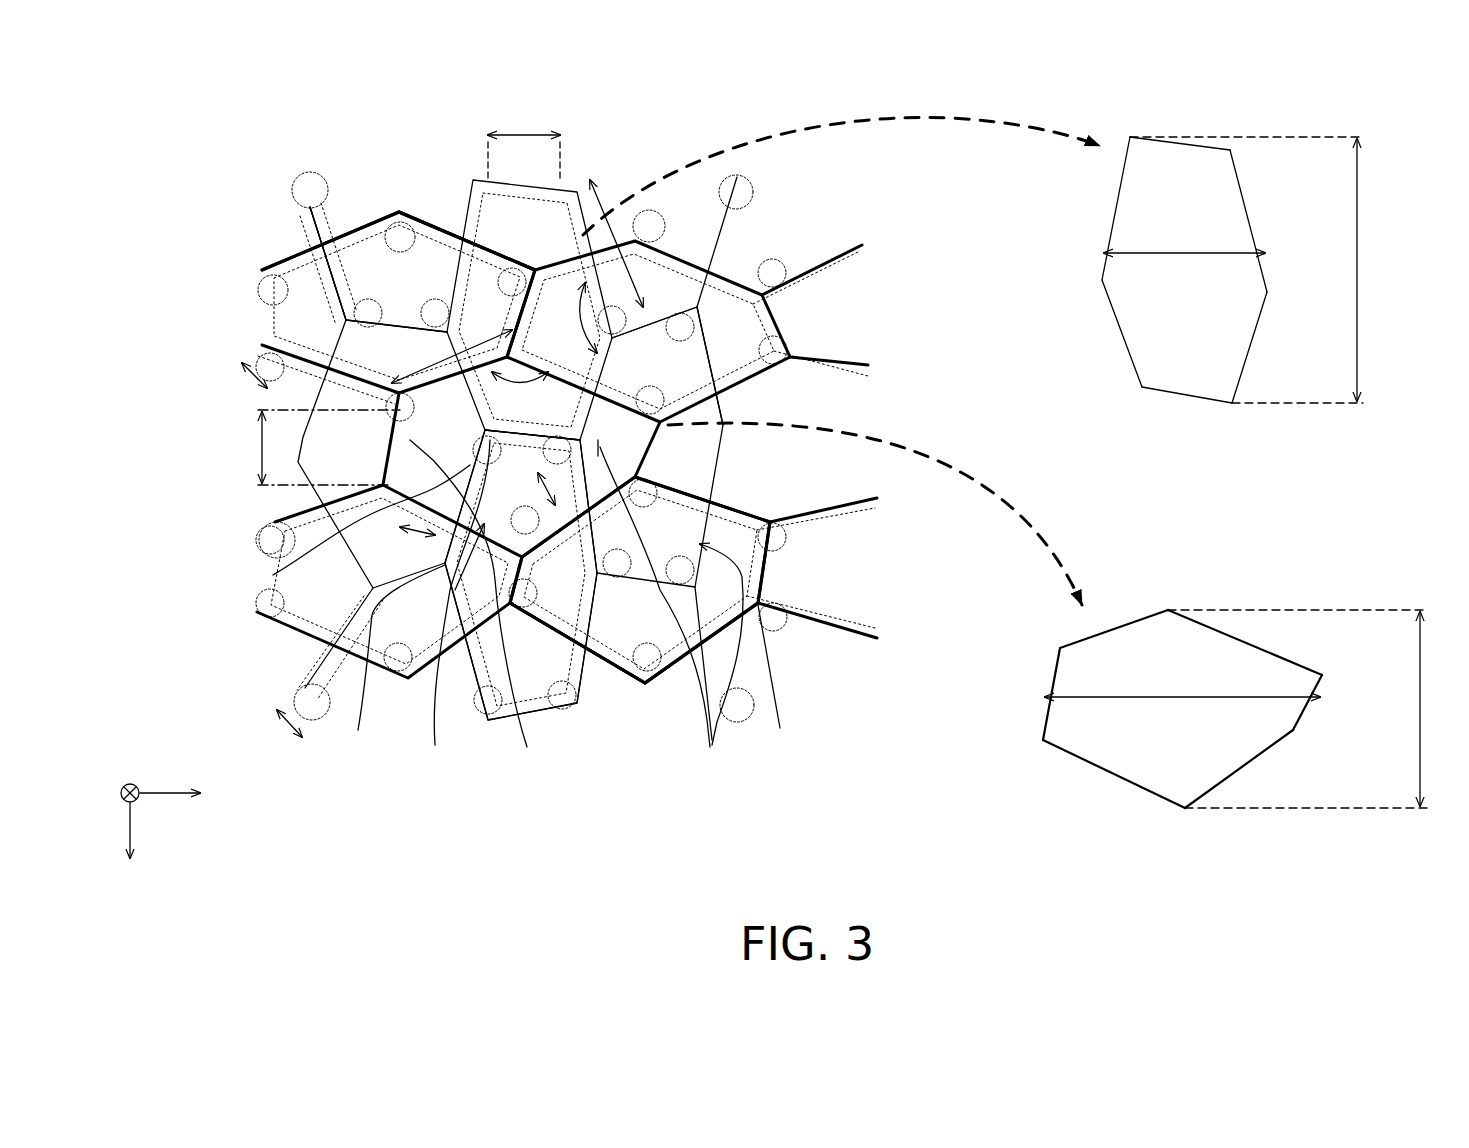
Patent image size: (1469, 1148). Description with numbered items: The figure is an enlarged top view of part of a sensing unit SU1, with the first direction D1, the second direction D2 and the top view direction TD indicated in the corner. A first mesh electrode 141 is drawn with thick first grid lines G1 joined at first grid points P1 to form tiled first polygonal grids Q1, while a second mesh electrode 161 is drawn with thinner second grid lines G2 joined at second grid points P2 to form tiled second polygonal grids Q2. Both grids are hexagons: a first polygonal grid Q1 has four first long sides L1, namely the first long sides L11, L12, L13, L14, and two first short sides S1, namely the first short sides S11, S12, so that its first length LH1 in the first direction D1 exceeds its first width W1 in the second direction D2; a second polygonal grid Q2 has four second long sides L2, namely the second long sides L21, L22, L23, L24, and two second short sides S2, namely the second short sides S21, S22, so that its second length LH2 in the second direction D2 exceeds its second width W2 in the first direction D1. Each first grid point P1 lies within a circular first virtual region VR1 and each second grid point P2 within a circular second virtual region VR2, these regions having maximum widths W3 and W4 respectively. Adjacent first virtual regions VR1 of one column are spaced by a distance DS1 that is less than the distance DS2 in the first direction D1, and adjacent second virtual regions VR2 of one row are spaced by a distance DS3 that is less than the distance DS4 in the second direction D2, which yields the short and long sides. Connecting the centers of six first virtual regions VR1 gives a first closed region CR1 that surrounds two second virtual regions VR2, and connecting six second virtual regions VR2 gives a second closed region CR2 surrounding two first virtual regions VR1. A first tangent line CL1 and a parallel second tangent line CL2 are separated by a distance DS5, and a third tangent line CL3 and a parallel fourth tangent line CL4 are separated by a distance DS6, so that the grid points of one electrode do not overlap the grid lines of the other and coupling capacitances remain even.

The sensing unit SU1 is at (228, 165).
The first mesh electrode 141 is at (448, 130).
The first grid point P1 is at (399, 210).
The first grid line G1 is at (440, 225).
The second mesh electrode 161 is at (178, 222).
The second grid line G2 is at (317, 232).
The second grid point P2 is at (345, 319).
The first virtual region VR1 is at (260, 542).
The second virtual region VR2 is at (303, 180).
The first long side L1 is at (672, 680).
The second long side L2 is at (727, 403).
The first short side S1 is at (772, 578).
The second short side S2 is at (637, 580).
The first tangent line CL1 is at (480, 612).
The second tangent line CL2 is at (670, 613).
The third tangent line CL3 is at (390, 666).
The fourth tangent line CL4 is at (272, 576).
The first closed region CR1 is at (451, 604).
The second closed region CR2 is at (782, 685).
The distance between center points of adjacent first virtual regions of the same col DS1 is at (305, 447).
The distance between center points of adjacent first virtual regions in the first di DS2 is at (442, 356).
The distance between center points of adjacent second virtual regions of the same ro DS3 is at (524, 145).
The distance between center points of adjacent second virtual regions in the second DS4 is at (639, 243).
The distance between second tangent line and first tangent line DS5 is at (522, 493).
The distance between fourth tangent line and third tangent line DS6 is at (426, 557).
The first width W1 is at (1318, 709).
The second width W2 is at (1184, 238).
The maximum width of first virtual region W3 is at (239, 384).
The maximum width of second virtual region W4 is at (288, 718).
The top view direction TD is at (125, 777).
The first direction D1 is at (190, 796).
The second direction D2 is at (129, 851).
The first short side S11 is at (1055, 678).
The first short side S12 is at (1305, 710).
The first long side L11 is at (1110, 775).
The first long side L12 is at (1112, 625).
The first long side L13 is at (1245, 785).
The first long side L14 is at (1250, 638).
The first length LH1 is at (1182, 682).
The first polygonal grid Q1 is at (1068, 755).
The second short side S21 is at (1187, 397).
The second short side S22 is at (1182, 136).
The second long side L21 is at (1250, 350).
The second long side L22 is at (1117, 330).
The second long side L23 is at (1252, 216).
The second long side L24 is at (1113, 208).
The second length LH2 is at (1270, 270).
The second polygonal grid Q2 is at (1214, 146).